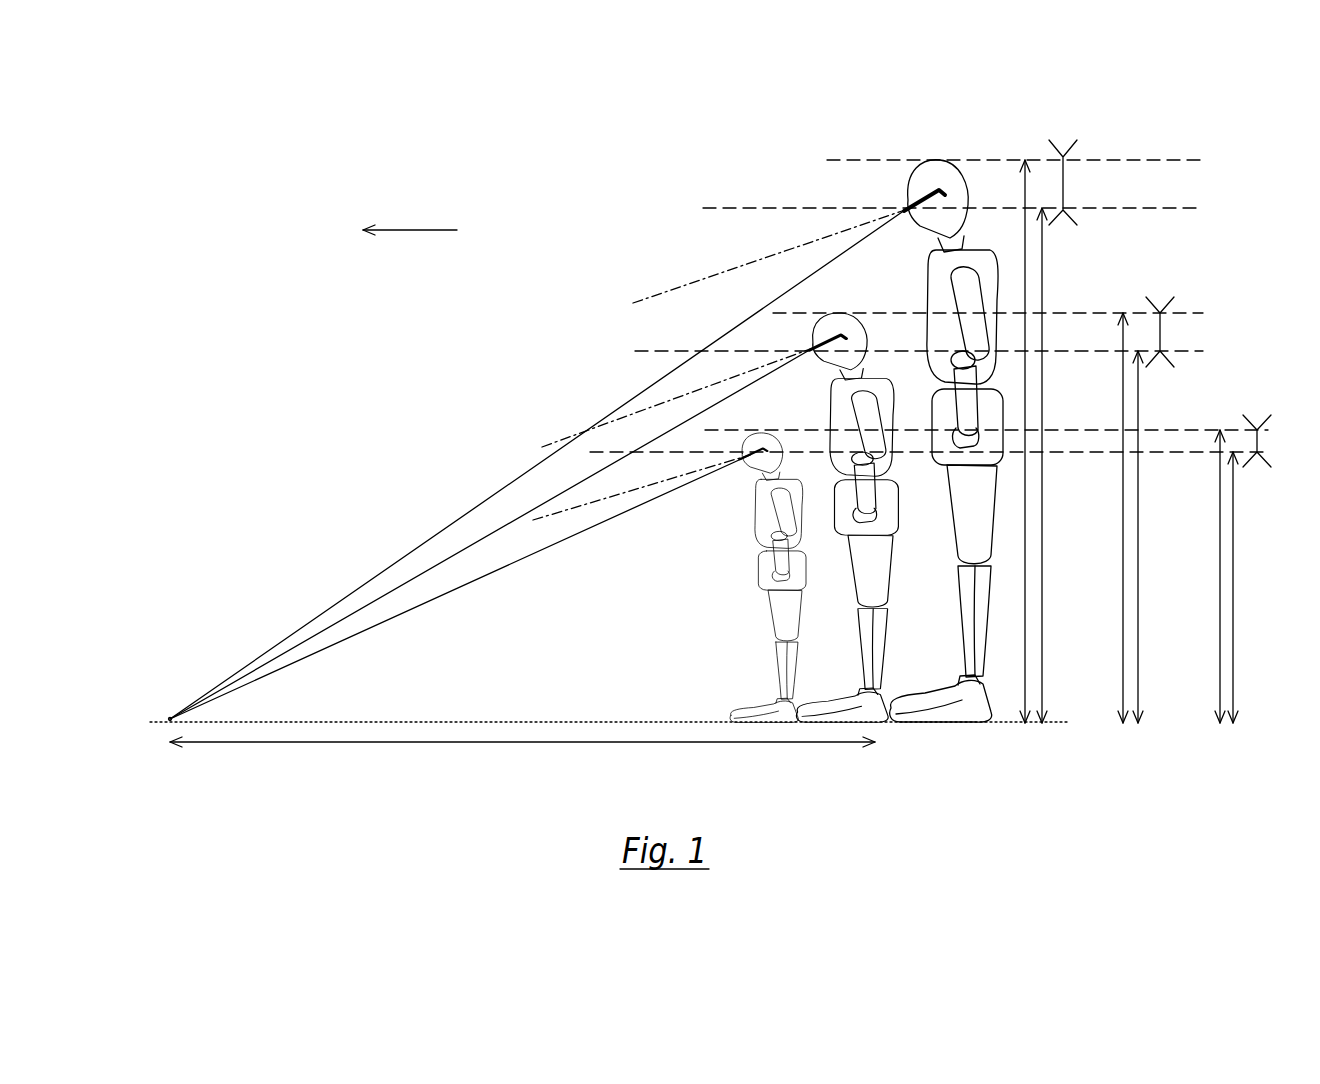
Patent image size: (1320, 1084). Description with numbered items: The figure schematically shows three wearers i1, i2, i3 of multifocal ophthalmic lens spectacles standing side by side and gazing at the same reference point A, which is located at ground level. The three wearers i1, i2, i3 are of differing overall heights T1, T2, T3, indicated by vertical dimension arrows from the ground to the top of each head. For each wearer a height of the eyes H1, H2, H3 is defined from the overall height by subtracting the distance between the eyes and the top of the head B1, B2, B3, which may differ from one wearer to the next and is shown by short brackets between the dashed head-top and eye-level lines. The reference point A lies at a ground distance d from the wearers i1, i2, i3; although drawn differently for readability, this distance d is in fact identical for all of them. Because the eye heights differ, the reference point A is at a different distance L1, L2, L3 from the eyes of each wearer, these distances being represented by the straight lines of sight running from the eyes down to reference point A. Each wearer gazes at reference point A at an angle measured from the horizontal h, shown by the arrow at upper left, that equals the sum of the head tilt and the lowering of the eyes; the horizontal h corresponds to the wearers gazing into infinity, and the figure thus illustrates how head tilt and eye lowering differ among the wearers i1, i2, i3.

The reference point A is at (170, 718).
The horizontal h is at (413, 230).
The distance d is at (468, 743).
The distance L1 is at (450, 592).
The distance L2 is at (420, 576).
The distance L3 is at (340, 601).
The wearer i1 is at (766, 663).
The wearer i2 is at (838, 323).
The wearer i3 is at (908, 183).
The height of the eyes H1 is at (1233, 629).
The height of the eyes H2 is at (1138, 641).
The height of the eyes H3 is at (1042, 276).
The height T1 is at (1220, 547).
The height T2 is at (1123, 536).
The height T3 is at (1025, 301).
The distance between the eyes and the top of the head B1 is at (1257, 445).
The distance between the eyes and the top of the head B2 is at (1160, 338).
The distance between the eyes and the top of the head B3 is at (1063, 197).